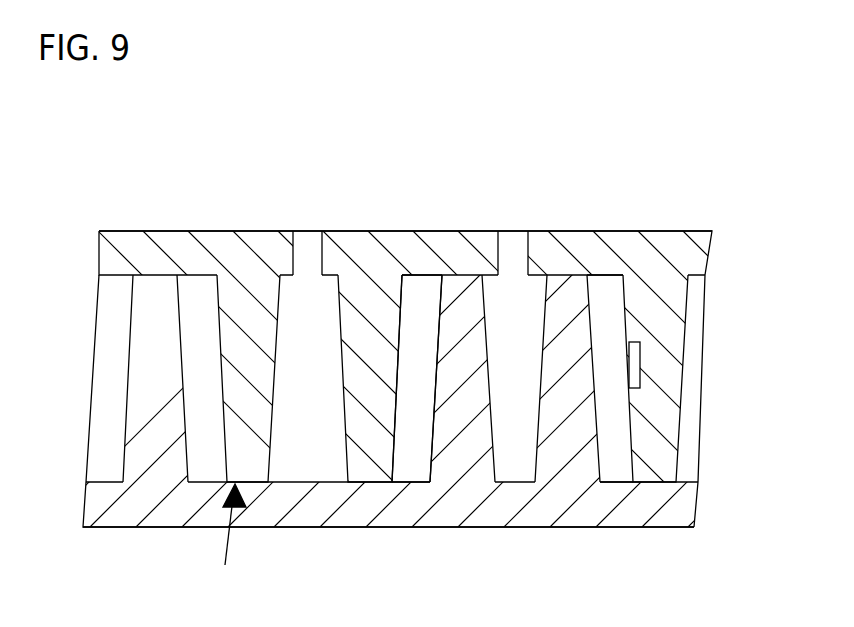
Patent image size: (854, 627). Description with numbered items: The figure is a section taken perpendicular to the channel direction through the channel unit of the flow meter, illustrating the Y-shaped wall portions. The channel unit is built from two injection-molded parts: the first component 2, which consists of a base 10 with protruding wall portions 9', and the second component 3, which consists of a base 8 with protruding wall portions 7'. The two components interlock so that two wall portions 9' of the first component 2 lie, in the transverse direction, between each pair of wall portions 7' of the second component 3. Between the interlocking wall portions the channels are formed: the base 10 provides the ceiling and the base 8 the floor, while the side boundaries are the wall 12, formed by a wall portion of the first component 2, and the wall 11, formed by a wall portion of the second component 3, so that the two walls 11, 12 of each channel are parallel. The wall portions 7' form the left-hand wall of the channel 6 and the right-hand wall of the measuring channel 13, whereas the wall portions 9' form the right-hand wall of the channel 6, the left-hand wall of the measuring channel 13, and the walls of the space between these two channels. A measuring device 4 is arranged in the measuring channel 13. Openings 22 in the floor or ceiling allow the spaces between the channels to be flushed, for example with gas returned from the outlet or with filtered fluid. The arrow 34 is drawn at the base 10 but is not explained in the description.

The first component 2 is at (449, 378).
The second component 3 is at (453, 371).
The measuring device 4 is at (632, 362).
The channel 6 is at (428, 305).
The wall portion 7' is at (379, 317).
The base 8 is at (687, 243).
The wall portion 9' is at (488, 317).
The base 10 is at (513, 503).
The wall 11 is at (394, 397).
The wall 12 is at (430, 398).
The measuring channel 13 is at (617, 310).
The opening 22 is at (307, 248).
The direction arrow 34 is at (229, 541).